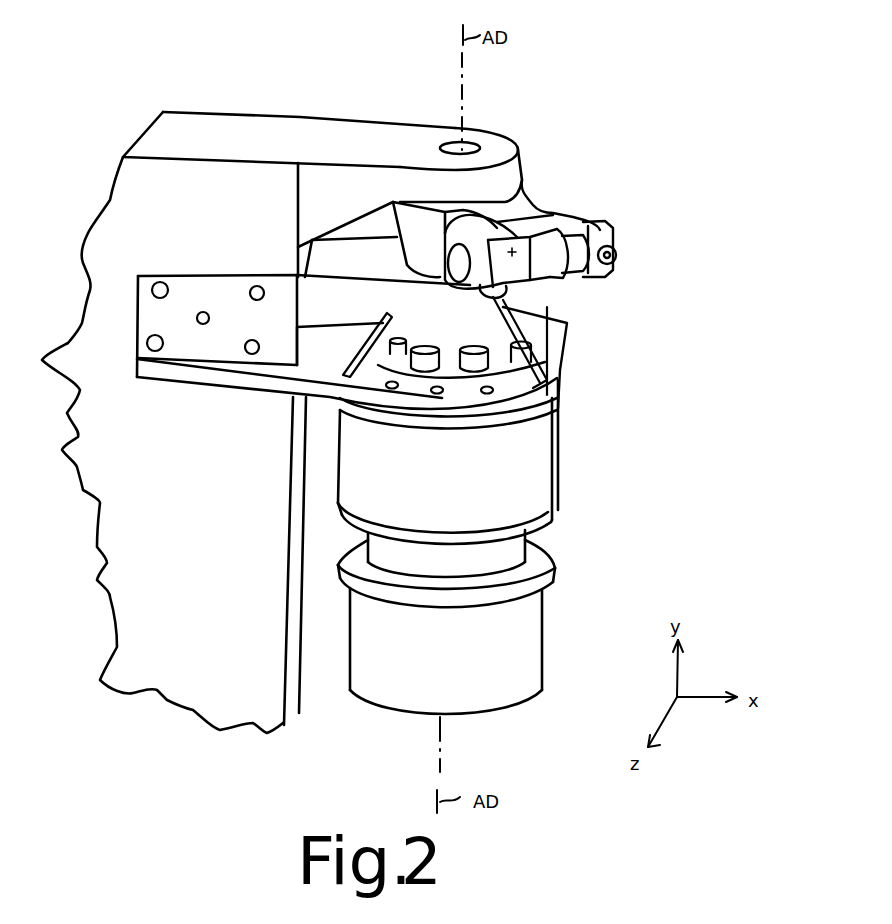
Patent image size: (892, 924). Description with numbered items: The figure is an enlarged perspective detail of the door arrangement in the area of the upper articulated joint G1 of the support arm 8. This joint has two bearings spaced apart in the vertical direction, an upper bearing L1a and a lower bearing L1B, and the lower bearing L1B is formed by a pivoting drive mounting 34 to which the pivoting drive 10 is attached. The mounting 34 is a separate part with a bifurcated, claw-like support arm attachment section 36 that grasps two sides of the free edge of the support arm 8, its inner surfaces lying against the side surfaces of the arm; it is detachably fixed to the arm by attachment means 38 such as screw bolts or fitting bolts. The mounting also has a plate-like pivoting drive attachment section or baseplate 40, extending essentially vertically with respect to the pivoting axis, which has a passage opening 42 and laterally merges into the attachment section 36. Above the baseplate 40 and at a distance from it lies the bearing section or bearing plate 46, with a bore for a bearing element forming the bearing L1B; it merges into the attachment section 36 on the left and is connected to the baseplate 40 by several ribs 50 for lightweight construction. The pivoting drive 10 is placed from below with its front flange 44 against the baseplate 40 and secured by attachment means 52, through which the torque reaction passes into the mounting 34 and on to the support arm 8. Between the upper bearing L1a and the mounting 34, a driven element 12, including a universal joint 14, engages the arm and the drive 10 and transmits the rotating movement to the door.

The support arm 8 is at (180, 667).
The pivoting drive 10 is at (528, 646).
The driven element 12 is at (545, 191).
The universal joint 14 is at (427, 228).
The pivoting drive mounting 34 is at (236, 380).
The support arm attachment section 36 is at (193, 287).
The attachment means 38 is at (147, 343).
The pivoting drive attachment section 40 is at (380, 393).
The passage opening 42 is at (550, 354).
The front flange 44 is at (420, 415).
The bearing section 46 is at (437, 307).
The ribs 50 is at (357, 356).
The attachment means 52 is at (487, 391).
The upper bearing L1a is at (493, 173).
The lower bearing L1B is at (590, 213).
The upper articulated joint G1 is at (700, 128).